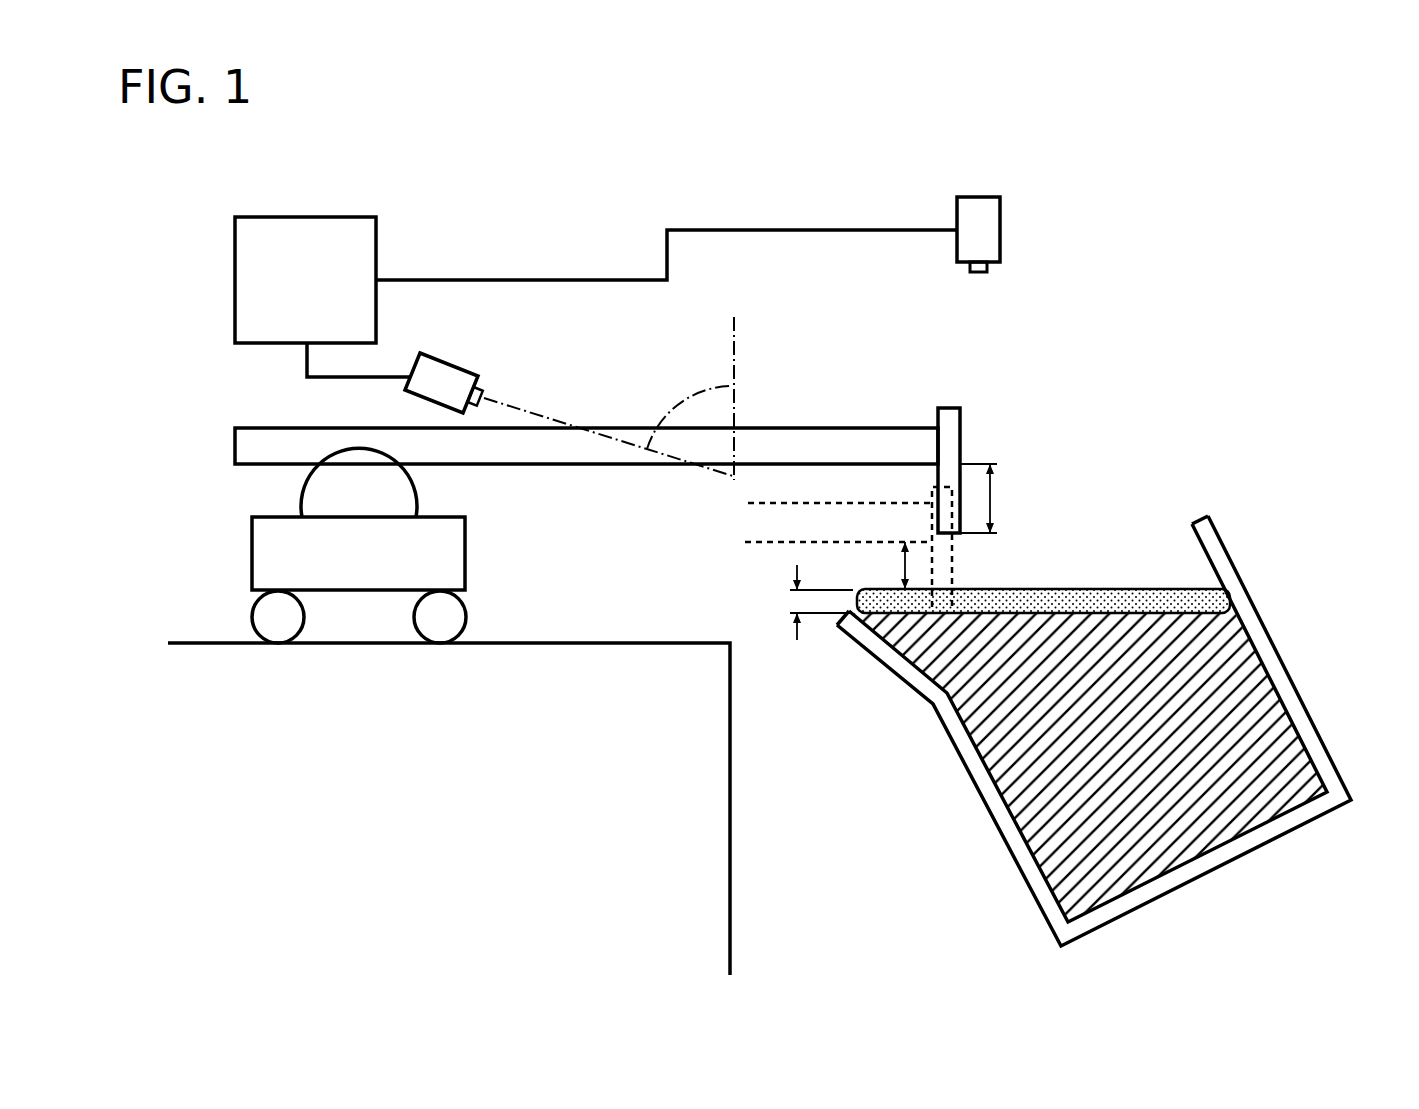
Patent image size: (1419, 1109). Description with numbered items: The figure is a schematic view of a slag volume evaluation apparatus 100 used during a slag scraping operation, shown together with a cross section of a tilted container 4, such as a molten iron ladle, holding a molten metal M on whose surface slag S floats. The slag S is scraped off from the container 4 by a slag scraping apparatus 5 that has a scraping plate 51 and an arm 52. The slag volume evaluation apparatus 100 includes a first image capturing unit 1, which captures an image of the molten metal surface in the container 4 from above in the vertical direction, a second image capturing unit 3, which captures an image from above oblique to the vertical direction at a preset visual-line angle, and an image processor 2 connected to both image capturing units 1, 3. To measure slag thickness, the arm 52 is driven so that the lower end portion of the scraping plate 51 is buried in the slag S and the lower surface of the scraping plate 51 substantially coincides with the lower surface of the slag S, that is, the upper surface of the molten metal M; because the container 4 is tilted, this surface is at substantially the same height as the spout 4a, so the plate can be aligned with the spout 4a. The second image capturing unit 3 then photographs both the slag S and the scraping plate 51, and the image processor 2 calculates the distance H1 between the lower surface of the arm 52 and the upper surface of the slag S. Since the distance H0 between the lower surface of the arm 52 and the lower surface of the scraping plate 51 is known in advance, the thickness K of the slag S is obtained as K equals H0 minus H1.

The slag volume evaluation apparatus 100 is at (532, 240).
The first image capturing unit 1 is at (975, 222).
The image processor 2 is at (300, 245).
The second image capturing unit 3 is at (448, 377).
The container 4 is at (1262, 632).
The spout 4a is at (847, 610).
The slag scraping apparatus 5 is at (533, 528).
The scraping plate 51 is at (953, 425).
The arm 52 is at (857, 445).
The slag S is at (1130, 593).
The molten metal M is at (1278, 747).
The distance between lower surface of arm and lower surface of scraping plate H0 is at (998, 498).
The distance between lower surface of arm and upper surface of slag H1 is at (879, 565).
The thickness of slag K is at (809, 602).